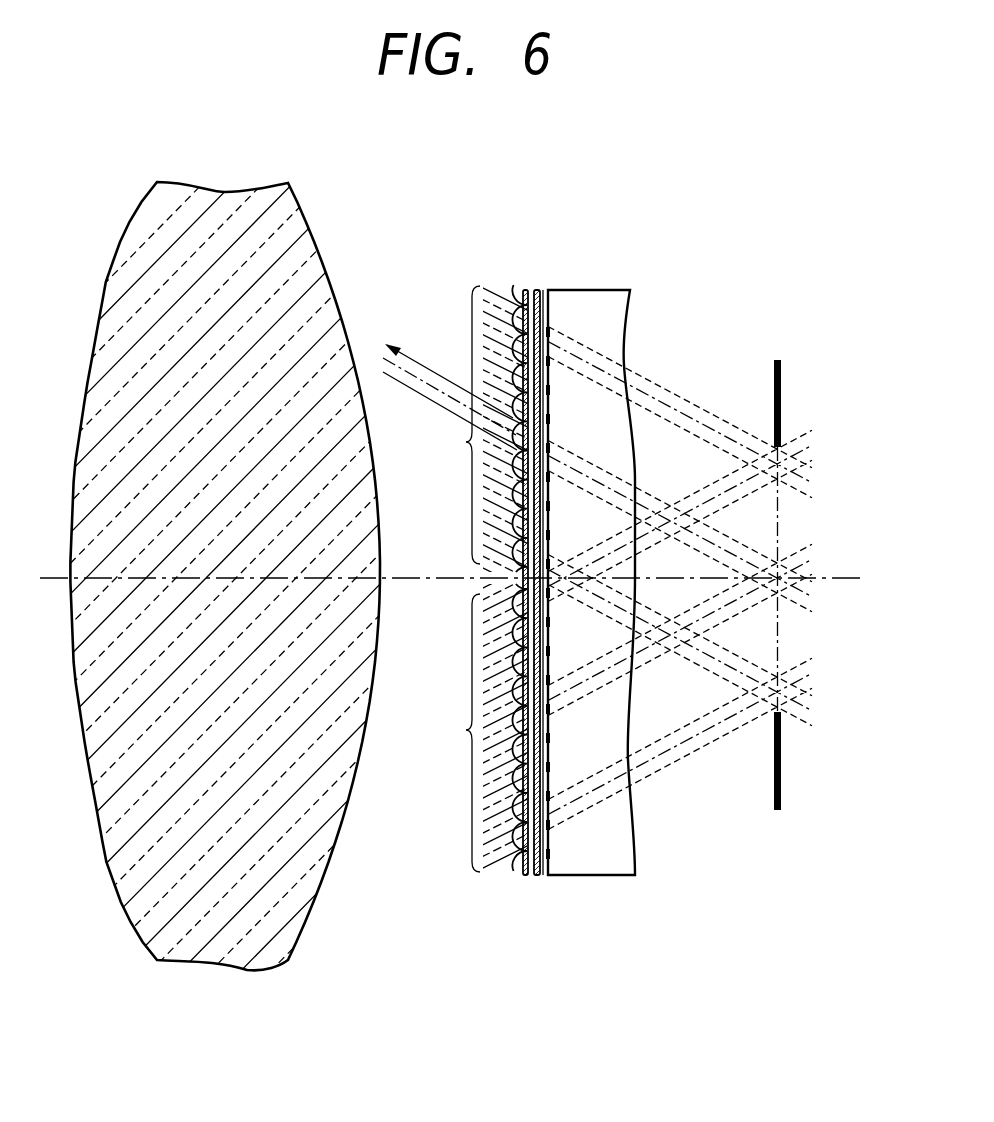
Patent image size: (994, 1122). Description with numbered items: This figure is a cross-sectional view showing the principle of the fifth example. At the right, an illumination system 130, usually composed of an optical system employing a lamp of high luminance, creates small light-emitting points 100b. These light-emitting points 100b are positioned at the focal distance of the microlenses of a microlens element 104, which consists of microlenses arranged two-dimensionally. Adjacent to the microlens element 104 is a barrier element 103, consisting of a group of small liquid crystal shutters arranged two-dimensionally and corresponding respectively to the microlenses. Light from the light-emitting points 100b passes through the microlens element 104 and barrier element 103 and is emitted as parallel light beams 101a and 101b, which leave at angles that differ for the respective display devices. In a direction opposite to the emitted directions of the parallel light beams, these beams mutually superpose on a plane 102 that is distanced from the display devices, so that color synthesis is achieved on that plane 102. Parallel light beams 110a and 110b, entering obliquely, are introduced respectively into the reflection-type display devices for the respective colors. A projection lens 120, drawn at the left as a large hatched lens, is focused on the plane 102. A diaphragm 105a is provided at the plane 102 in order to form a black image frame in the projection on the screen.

The projection lens 120 is at (308, 917).
The parallel light beam 110a is at (513, 300).
The parallel light beam 110b is at (493, 873).
The parallel light beam 101a is at (444, 425).
The parallel light beam 101b is at (445, 733).
The microlens element 104 is at (518, 876).
The barrier element 103 is at (541, 860).
The illumination system 130 is at (632, 818).
The small light-emitting points 100b is at (548, 828).
The plane 102 is at (780, 634).
The diaphragm 105a is at (782, 778).